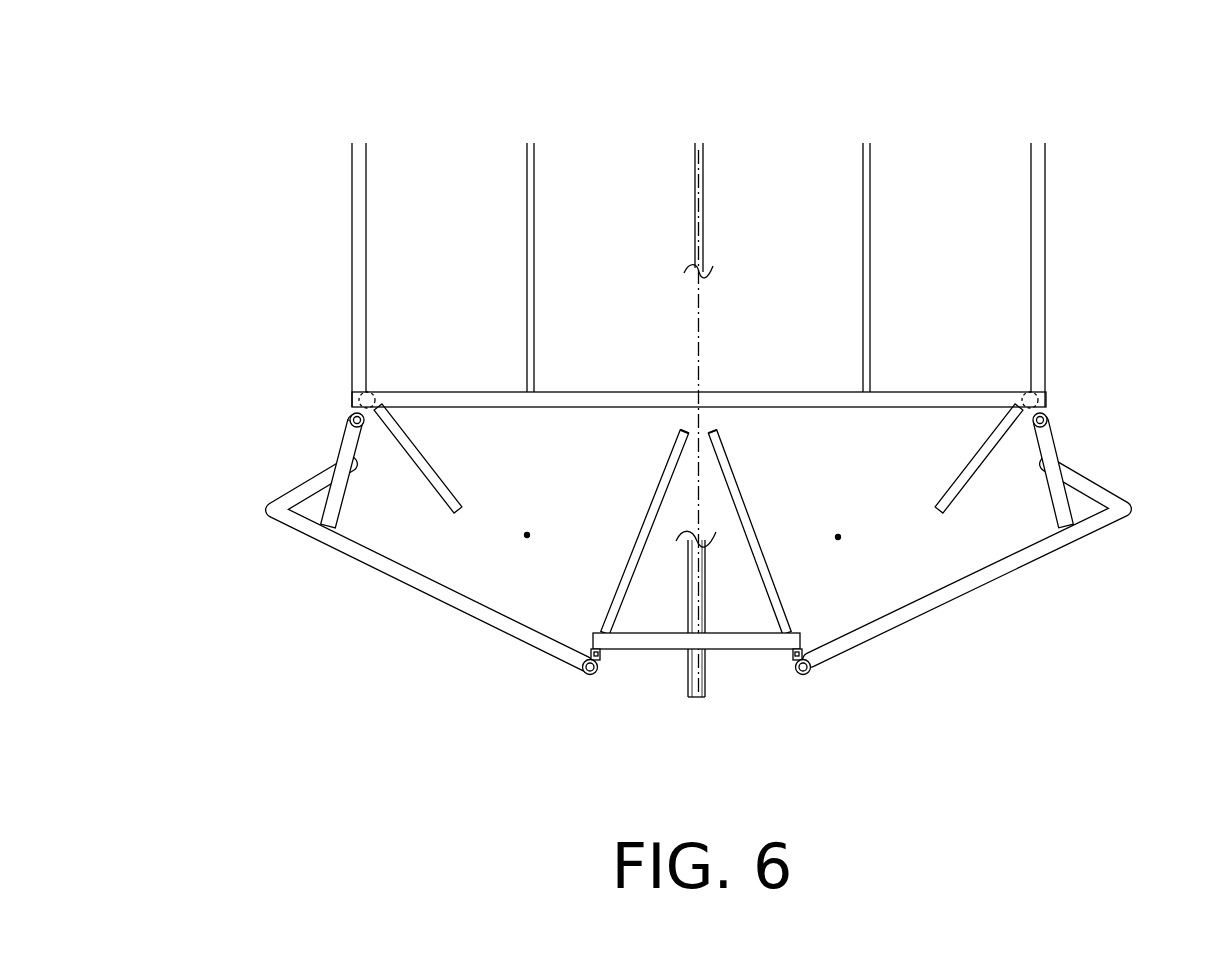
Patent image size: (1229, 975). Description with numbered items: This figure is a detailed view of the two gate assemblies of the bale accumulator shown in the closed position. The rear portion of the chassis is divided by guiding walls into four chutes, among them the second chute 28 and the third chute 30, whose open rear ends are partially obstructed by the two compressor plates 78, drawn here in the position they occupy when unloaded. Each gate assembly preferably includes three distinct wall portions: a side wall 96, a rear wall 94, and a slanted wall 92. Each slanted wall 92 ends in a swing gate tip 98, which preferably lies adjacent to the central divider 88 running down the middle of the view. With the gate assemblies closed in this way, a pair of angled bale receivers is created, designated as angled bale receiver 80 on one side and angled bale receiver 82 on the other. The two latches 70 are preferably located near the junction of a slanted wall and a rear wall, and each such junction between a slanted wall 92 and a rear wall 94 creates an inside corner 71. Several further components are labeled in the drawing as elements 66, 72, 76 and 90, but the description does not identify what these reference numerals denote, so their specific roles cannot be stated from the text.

The second chute 28 is at (486, 213).
The third chute 30 is at (909, 213).
The pivot pin 66 is at (703, 362).
The latch 70 is at (697, 719).
The inside corner 71 is at (699, 707).
The lower cross member 72 is at (664, 598).
The pivot connection 76 is at (619, 300).
The compressor plate 78 is at (698, 397).
The angled bale receiver 80 is at (377, 588).
The angled bale receiver 82 is at (986, 589).
The central divider 88 is at (754, 420).
The upper cross member 90 is at (779, 312).
The slanted wall 92 is at (700, 532).
The rear wall 94 is at (698, 603).
The side wall 96 is at (703, 455).
The swing gate tip 98 is at (699, 375).